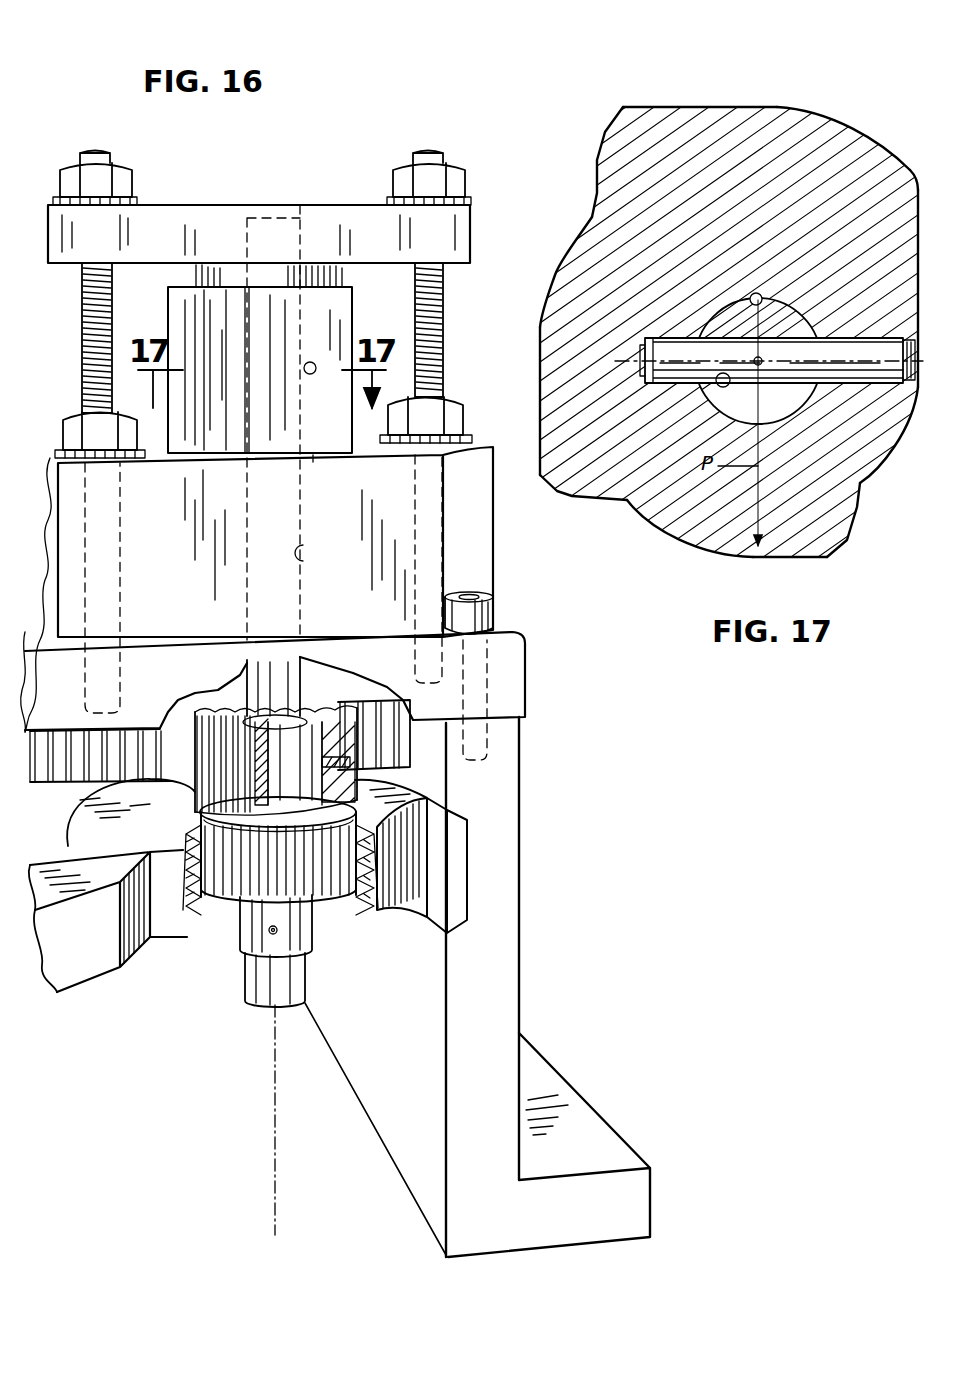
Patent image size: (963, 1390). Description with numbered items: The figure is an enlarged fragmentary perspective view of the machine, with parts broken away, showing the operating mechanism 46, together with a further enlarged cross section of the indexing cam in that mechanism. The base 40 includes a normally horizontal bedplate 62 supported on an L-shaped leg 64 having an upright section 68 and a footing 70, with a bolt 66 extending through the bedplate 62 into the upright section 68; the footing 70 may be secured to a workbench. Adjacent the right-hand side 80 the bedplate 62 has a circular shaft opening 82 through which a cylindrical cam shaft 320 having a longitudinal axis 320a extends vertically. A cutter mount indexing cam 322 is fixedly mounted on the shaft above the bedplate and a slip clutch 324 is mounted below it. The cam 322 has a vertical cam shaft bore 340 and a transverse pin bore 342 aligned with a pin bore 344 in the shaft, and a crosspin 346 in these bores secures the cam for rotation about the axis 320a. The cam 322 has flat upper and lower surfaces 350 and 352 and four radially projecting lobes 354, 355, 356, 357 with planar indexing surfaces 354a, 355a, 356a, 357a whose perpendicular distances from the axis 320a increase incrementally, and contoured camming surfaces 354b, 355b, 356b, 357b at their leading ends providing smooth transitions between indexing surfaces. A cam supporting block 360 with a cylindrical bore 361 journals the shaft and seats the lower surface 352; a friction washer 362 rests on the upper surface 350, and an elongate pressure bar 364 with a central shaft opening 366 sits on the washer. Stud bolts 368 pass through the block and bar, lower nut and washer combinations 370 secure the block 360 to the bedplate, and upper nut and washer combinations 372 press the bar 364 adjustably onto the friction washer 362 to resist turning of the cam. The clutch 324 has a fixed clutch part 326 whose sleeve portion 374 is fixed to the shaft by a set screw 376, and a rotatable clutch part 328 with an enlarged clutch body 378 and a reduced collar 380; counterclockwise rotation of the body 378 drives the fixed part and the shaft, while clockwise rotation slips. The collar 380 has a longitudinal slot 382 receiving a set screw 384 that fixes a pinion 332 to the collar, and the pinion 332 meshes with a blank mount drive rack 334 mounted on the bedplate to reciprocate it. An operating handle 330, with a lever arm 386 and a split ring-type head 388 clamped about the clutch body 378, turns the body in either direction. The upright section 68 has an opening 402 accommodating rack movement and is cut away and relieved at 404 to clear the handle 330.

In FIG. 16, the base 40 is at (638, 965).
In FIG. 16, the operating mechanism 46 is at (203, 1050).
In FIG. 16, the bedplate 62 is at (528, 678).
In FIG. 16, the leg 64 is at (417, 1138).
In FIG. 16, the bolt 66 is at (480, 625).
In FIG. 16, the upright section 68 is at (527, 915).
In FIG. 16, the footing 70 is at (585, 1130).
In FIG. 16, the right-hand side 80 is at (528, 815).
In FIG. 16, the shaft opening 82 is at (310, 653).
In FIG. 16, the cam shaft 320 is at (275, 1013).
In FIG. 17, the cam shaft 320 is at (718, 313).
In FIG. 16, the longitudinal axis 320a is at (275, 1150).
In FIG. 17, the longitudinal axis 320a is at (770, 338).
In FIG. 16, the cutter mount indexing cam 322 is at (346, 313).
In FIG. 17, the cutter mount indexing cam 322 is at (703, 399).
In FIG. 16, the slip clutch 324 is at (343, 1010).
In FIG. 16, the fixed clutch part 326 is at (239, 958).
In FIG. 16, the rotatable clutch part 328 is at (188, 827).
In FIG. 16, the operating handle 330 is at (56, 988).
In FIG. 16, the pinion 332 is at (205, 790).
In FIG. 16, the blank mount drive rack 334 is at (210, 692).
In FIG. 17, the cam shaft bore 340 is at (761, 300).
In FIG. 17, the pin bore 342 is at (838, 340).
In FIG. 17, the pin bore 344 is at (714, 388).
In FIG. 16, the crosspin 346 is at (313, 375).
In FIG. 17, the crosspin 346 is at (643, 347).
In FIG. 16, the upper surface 350 is at (345, 283).
In FIG. 16, the lower surface 352 is at (313, 460).
In FIG. 17, the lobe 354 is at (888, 476).
In FIG. 17, the indexing surface 354a is at (912, 233).
In FIG. 17, the camming surface 354b is at (902, 158).
In FIG. 17, the lobe 355 is at (655, 547).
In FIG. 17, the indexing surface 355a is at (760, 552).
In FIG. 17, the camming surface 355b is at (847, 548).
In FIG. 17, the lobe 356 is at (560, 253).
In FIG. 17, the indexing surface 356a is at (532, 375).
In FIG. 17, the camming surface 356b is at (558, 497).
In FIG. 17, the lobe 357 is at (824, 108).
In FIG. 17, the indexing surface 357a is at (648, 107).
In FIG. 17, the camming surface 357b is at (600, 135).
In FIG. 16, the cam supporting block 360 is at (140, 571).
In FIG. 16, the cylindrical bore 361 is at (318, 558).
In FIG. 16, the friction washer 362 is at (200, 278).
In FIG. 16, the pressure bar 364 is at (188, 205).
In FIG. 16, the shaft opening 366 is at (300, 205).
In FIG. 16, the stud bolt 368 is at (115, 293).
In FIG. 16, the lower nut and washer combination 370 is at (63, 438).
In FIG. 16, the upper nut and washer combination 372 is at (130, 185).
In FIG. 16, the sleeve portion 374 is at (305, 960).
In FIG. 16, the set screw 376 is at (280, 931).
In FIG. 16, the clutch body 378 is at (215, 903).
In FIG. 16, the collar 380 is at (286, 805).
In FIG. 16, the longitudinal slot 382 is at (312, 735).
In FIG. 16, the set screw 384 is at (356, 768).
In FIG. 16, the lever arm 386 is at (87, 984).
In FIG. 16, the head 388 is at (72, 808).
In FIG. 16, the opening 402 is at (412, 742).
In FIG. 16, the cut away and relieved portion 404 is at (437, 864).